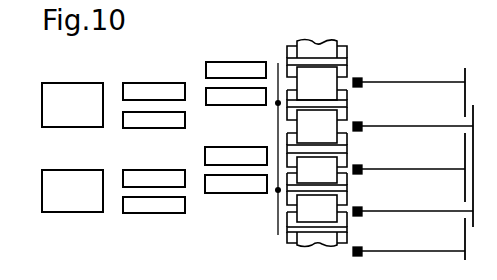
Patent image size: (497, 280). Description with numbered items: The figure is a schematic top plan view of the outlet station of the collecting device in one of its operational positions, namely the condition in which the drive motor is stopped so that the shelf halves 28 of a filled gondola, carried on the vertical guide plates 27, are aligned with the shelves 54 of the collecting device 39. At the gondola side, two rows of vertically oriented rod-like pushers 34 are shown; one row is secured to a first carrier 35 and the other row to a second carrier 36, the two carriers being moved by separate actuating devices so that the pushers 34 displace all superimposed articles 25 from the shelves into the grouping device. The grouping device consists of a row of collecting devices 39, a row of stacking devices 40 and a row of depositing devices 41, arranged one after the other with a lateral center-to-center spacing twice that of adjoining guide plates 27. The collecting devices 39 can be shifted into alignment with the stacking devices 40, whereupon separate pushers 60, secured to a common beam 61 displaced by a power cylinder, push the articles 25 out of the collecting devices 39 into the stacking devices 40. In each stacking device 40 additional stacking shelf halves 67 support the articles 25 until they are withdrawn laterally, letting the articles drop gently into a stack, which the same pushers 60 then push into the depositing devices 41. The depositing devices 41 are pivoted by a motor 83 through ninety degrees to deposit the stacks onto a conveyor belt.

The depositing device 41 is at (58, 76).
The motor 83 is at (82, 88).
The stacking device 40 is at (147, 76).
The stacking shelf half 67 is at (165, 88).
The collecting device 39 is at (229, 56).
The shelf of the collecting device 54 is at (253, 67).
The shelf half 28 is at (345, 48).
The guide plate 27 is at (341, 134).
The article 25 is at (328, 202).
The pusher 34 is at (360, 88).
The first carrier 35 is at (463, 73).
The second carrier 36 is at (470, 128).
The pusher 60 is at (277, 192).
The beam 61 is at (278, 220).